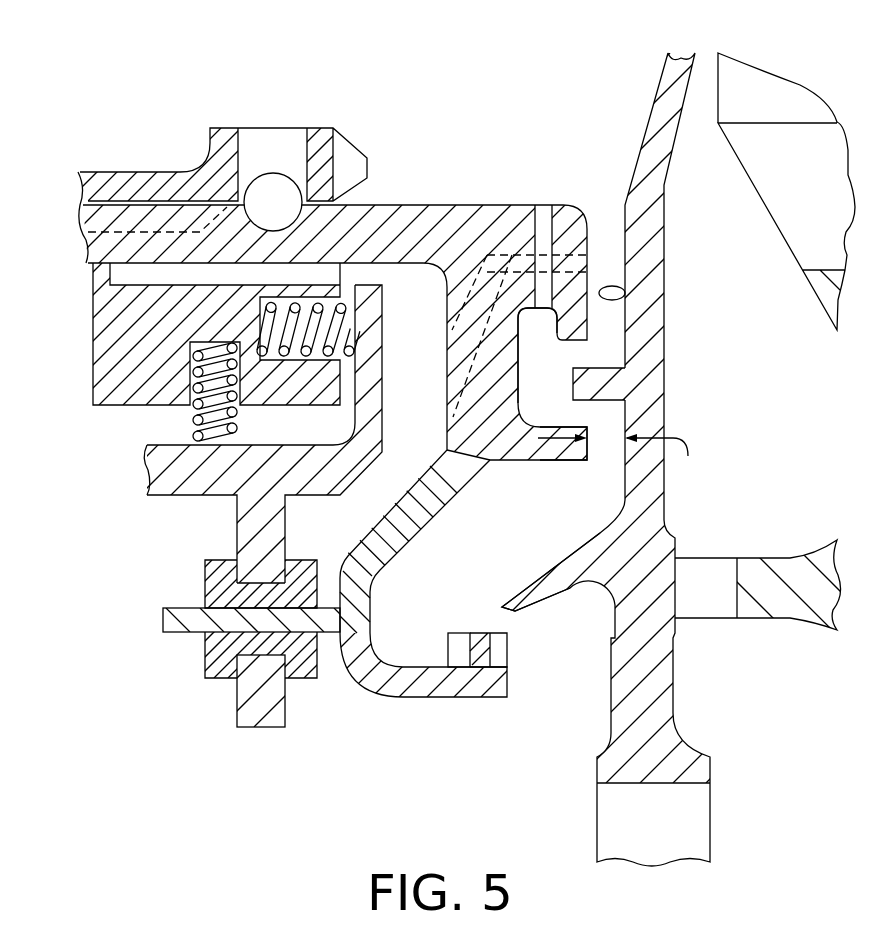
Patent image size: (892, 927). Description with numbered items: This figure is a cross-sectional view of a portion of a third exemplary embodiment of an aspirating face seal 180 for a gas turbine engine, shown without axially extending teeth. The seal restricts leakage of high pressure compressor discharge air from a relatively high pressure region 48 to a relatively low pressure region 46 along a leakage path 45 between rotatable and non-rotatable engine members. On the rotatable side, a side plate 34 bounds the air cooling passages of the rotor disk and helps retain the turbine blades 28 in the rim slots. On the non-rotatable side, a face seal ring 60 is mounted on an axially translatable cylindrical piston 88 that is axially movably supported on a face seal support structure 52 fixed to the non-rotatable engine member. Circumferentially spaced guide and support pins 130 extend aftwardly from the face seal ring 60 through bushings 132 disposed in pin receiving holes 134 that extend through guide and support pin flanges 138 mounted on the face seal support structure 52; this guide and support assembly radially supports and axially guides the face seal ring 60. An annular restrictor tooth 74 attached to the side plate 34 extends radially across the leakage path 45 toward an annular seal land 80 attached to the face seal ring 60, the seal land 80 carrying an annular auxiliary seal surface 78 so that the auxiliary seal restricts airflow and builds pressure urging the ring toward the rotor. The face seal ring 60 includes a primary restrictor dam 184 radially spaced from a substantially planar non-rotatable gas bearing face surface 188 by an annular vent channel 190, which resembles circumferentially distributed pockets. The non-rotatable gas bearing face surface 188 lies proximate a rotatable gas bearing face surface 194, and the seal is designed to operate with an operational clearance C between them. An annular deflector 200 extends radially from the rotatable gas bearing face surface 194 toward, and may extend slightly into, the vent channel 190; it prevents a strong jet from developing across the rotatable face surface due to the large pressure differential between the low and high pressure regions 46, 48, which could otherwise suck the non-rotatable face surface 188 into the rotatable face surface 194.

The turbine blade 28 is at (783, 620).
The side plate 34 is at (707, 752).
The leakage path 45 is at (475, 570).
The low pressure region 46 is at (508, 38).
The high pressure region 48 is at (510, 803).
The face seal support structure 52 is at (308, 497).
The face seal ring 60 is at (527, 205).
The restrictor tooth 74 is at (528, 605).
The auxiliary seal surface 78 is at (482, 633).
The seal land 80 is at (460, 652).
The piston 88 is at (190, 171).
The guide and support pins 130 is at (188, 608).
The bushings 132 is at (305, 678).
The pin receiving holes 134 is at (258, 655).
The guide and support pin flanges 138 is at (252, 727).
The aspirating face seal 180 is at (597, 158).
The primary restrictor dam 184 is at (563, 460).
The non-rotatable gas bearing face surface 188 is at (592, 260).
The vent channel 190 is at (567, 365).
The rotatable gas bearing face surface 194 is at (621, 289).
The deflector 200 is at (597, 400).
The operational clearance C is at (666, 452).